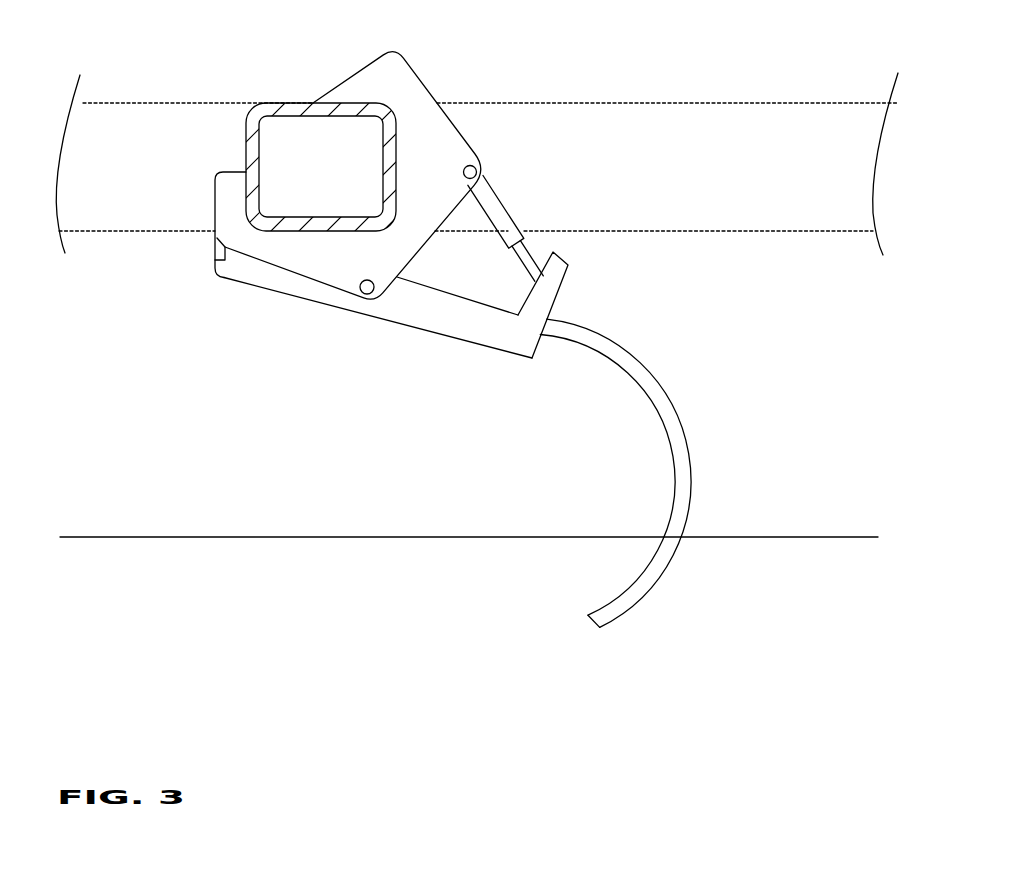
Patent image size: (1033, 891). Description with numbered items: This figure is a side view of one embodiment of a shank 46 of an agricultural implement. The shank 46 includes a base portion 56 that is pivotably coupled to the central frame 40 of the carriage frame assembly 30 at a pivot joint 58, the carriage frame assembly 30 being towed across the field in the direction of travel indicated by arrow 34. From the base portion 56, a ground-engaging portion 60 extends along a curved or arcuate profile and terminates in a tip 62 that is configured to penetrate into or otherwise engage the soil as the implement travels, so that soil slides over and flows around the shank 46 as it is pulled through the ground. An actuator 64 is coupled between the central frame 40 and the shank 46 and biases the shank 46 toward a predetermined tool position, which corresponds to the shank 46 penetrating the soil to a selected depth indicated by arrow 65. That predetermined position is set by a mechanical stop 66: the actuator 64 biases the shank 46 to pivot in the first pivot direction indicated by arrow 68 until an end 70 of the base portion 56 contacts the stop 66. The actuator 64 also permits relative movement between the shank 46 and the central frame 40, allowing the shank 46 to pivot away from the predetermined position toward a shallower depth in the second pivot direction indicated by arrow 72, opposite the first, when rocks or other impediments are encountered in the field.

The carriage frame assembly 30 is at (153, 73).
The direction of travel 34 is at (2, 355).
The central frame 40 is at (280, 102).
The shank 46 is at (618, 418).
The base portion 56 is at (433, 332).
The pivot joint 58 is at (360, 288).
The ground-engaging portion 60 is at (588, 365).
The tip 62 is at (588, 617).
The actuator 64 is at (515, 205).
The depth of penetration 65 is at (458, 538).
The mechanical stop 66 is at (215, 245).
The first pivot direction 68 is at (663, 650).
The end of the base portion 70 is at (208, 277).
The second pivot direction 72 is at (635, 288).